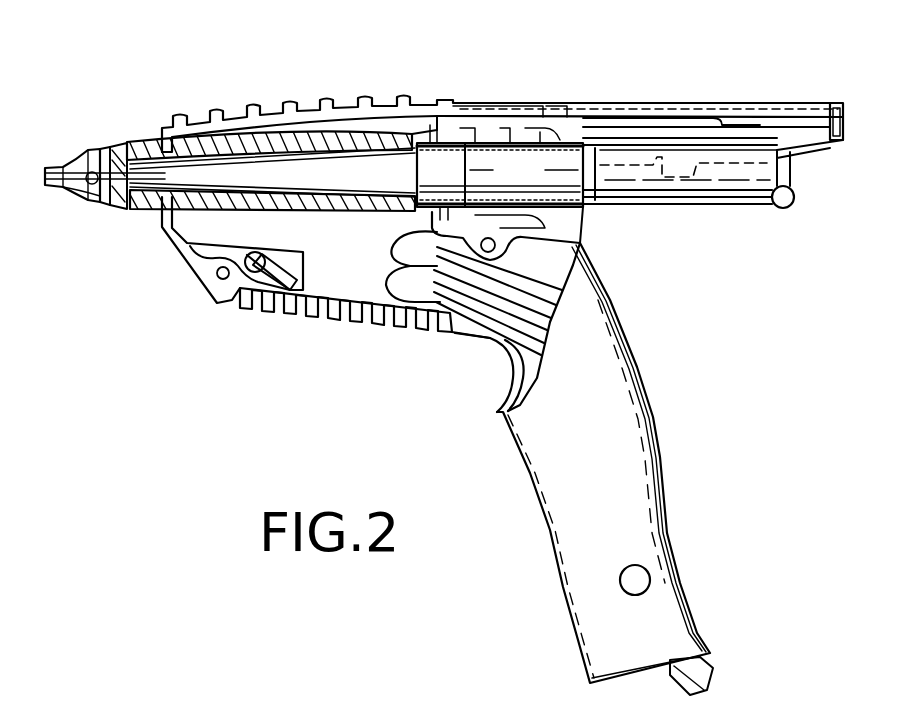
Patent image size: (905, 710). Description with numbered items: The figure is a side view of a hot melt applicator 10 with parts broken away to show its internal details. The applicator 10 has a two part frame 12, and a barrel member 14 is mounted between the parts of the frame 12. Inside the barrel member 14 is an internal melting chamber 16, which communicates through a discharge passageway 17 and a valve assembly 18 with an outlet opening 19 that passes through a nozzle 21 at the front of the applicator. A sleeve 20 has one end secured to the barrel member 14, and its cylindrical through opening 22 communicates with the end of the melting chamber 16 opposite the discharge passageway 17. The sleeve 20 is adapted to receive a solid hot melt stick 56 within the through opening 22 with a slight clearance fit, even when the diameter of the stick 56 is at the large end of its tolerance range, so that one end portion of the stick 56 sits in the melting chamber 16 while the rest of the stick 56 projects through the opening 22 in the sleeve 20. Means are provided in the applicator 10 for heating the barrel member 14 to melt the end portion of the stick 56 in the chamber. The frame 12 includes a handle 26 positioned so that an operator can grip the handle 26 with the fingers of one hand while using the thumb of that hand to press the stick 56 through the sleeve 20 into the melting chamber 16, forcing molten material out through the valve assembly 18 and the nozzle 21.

The hot melt applicator 10 is at (537, 92).
The two part frame 12 is at (632, 471).
The barrel member 14 is at (230, 140).
The melting chamber 16 is at (306, 160).
The discharge passageway 17 is at (121, 208).
The valve assembly 18 is at (112, 208).
The outlet opening 19 is at (63, 183).
The sleeve 20 is at (553, 140).
The nozzle 21 is at (48, 165).
The cylindrical through opening 22 is at (524, 167).
The handle 26 is at (566, 545).
The hot melt stick 56 is at (598, 206).